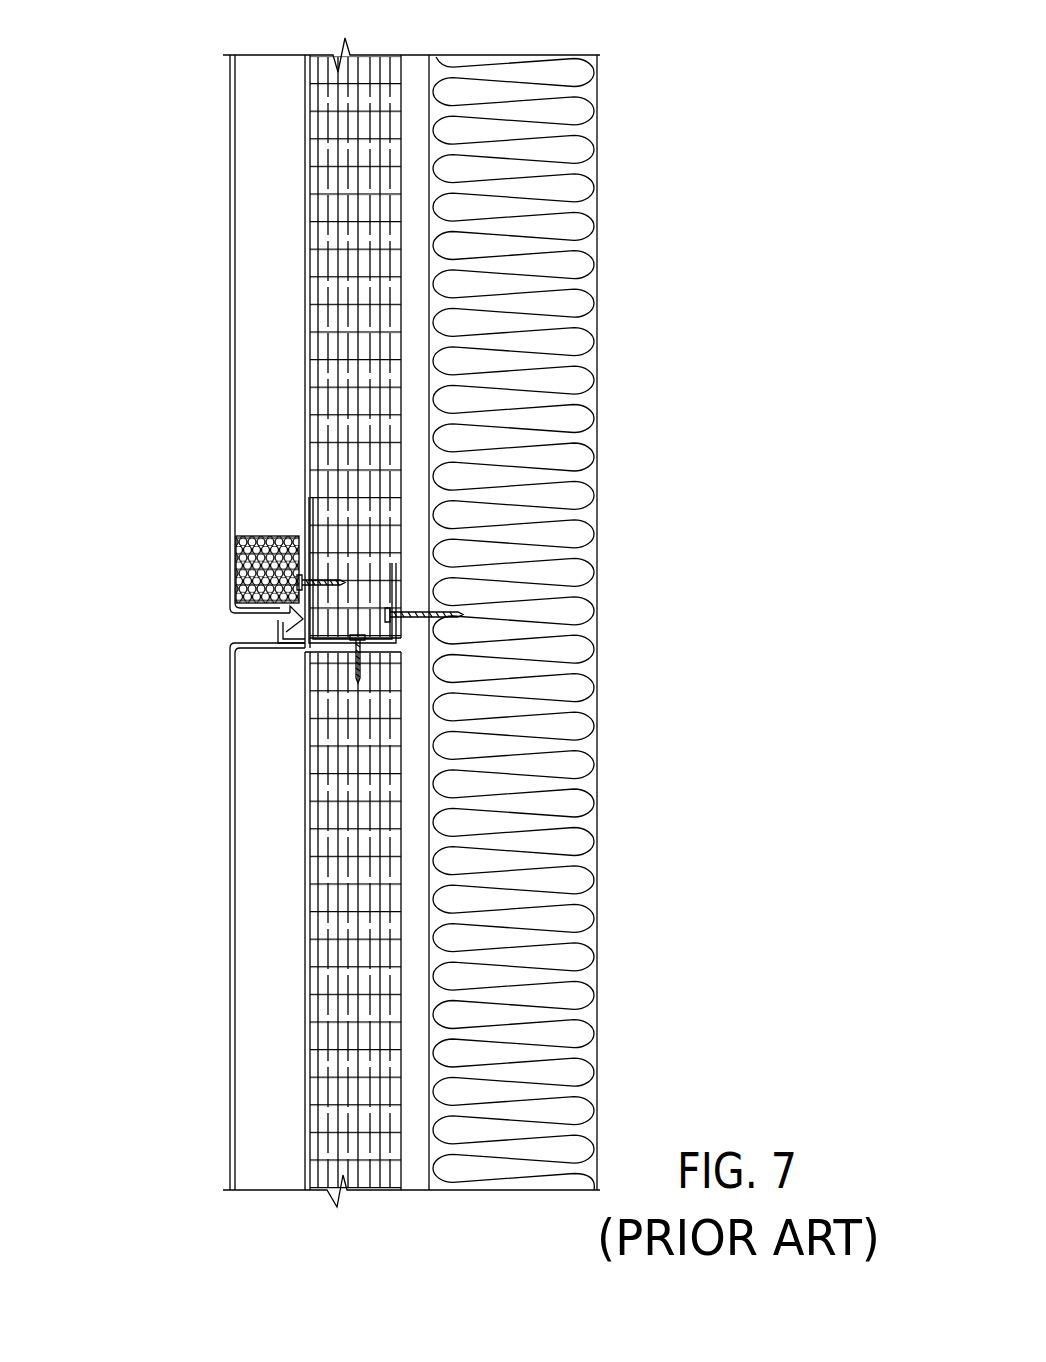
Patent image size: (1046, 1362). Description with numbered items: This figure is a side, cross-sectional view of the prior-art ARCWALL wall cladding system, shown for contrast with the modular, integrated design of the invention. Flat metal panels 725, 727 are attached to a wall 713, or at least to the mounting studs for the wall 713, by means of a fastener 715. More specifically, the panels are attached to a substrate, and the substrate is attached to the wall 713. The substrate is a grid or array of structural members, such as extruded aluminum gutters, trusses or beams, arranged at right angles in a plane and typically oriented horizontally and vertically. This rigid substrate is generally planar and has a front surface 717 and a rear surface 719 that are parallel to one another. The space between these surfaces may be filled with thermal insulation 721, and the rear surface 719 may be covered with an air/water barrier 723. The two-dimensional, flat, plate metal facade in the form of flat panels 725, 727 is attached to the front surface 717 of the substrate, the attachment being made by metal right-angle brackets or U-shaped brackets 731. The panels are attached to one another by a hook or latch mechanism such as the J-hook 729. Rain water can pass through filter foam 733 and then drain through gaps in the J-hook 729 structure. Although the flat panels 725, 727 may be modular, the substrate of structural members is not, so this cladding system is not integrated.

The wall 713 is at (553, 110).
The fastener 715 is at (420, 607).
The front surface 717 is at (310, 217).
The rear surface 719 is at (403, 53).
The thermal insulation 721 is at (330, 98).
The air/water barrier 723 is at (398, 1095).
The flat panel 725 is at (228, 347).
The flat panel 727 is at (229, 1128).
The J-hook 729 is at (293, 637).
The U-shaped bracket 731 is at (375, 650).
The filter foam 733 is at (270, 536).